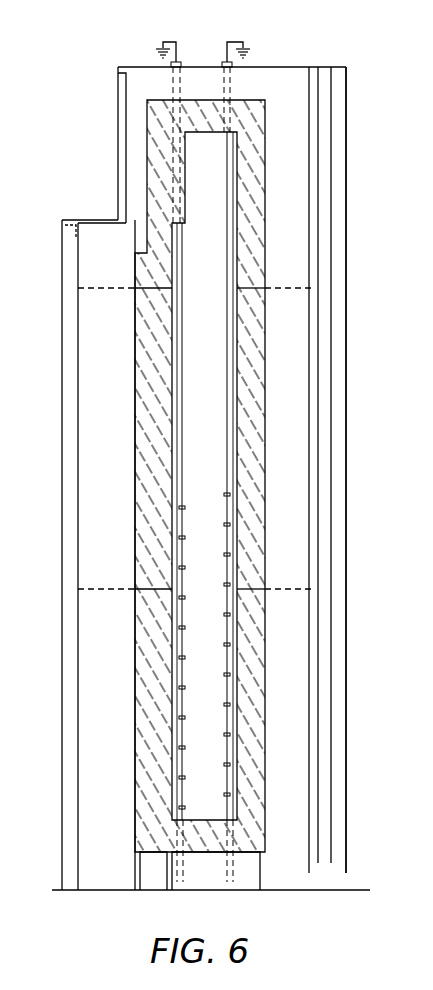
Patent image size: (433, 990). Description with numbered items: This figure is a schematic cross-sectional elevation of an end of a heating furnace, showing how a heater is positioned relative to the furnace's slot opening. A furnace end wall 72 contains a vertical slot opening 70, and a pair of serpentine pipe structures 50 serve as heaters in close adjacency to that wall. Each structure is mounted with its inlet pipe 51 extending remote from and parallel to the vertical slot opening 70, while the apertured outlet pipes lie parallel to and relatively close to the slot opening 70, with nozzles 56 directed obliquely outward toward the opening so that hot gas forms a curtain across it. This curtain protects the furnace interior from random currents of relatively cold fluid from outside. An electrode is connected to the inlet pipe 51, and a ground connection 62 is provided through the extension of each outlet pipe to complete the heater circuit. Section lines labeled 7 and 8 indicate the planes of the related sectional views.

The section line 7- 7 is at (178, 22).
The section line 8- 8 is at (90, 402).
The serpentine pipe structure 50 is at (173, 674).
The inlet pipe 51 is at (168, 78).
The nozzle 56 is at (183, 506).
The ground connection 62 is at (163, 42).
The vertical slot opening 70 is at (210, 251).
The furnace end wall 72 is at (135, 533).